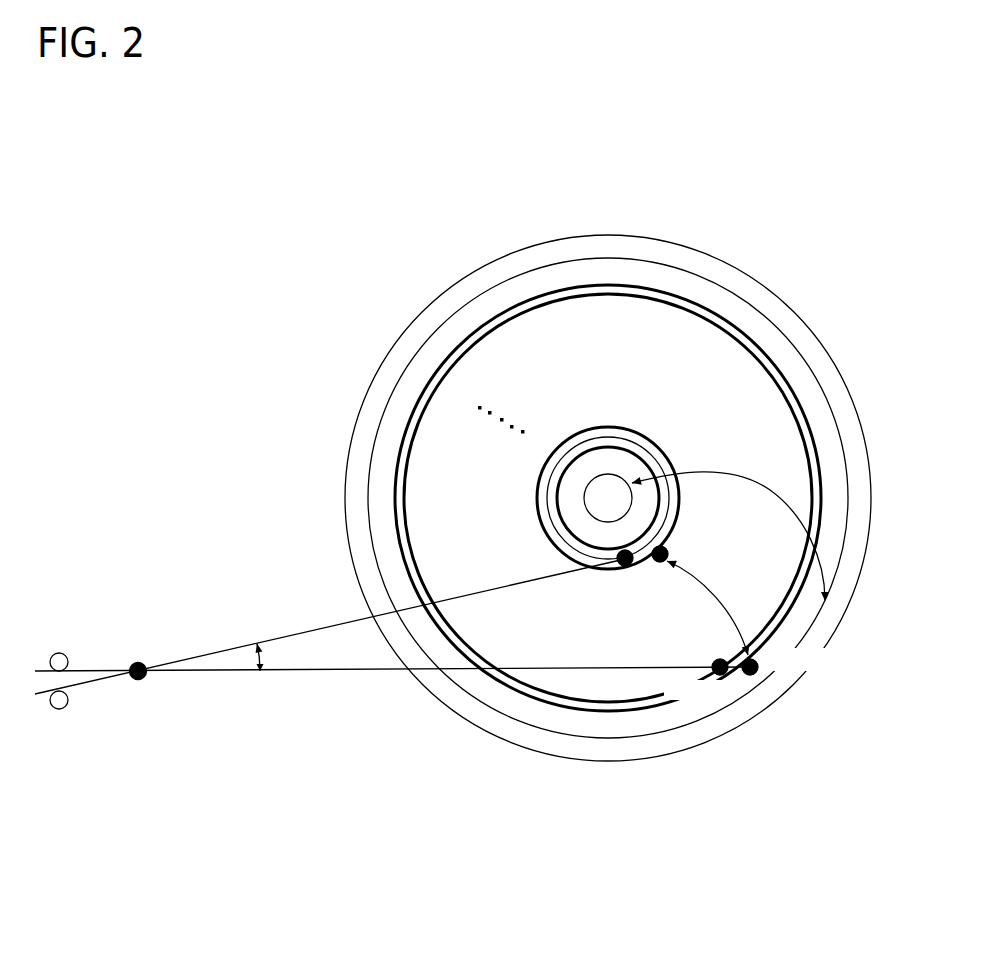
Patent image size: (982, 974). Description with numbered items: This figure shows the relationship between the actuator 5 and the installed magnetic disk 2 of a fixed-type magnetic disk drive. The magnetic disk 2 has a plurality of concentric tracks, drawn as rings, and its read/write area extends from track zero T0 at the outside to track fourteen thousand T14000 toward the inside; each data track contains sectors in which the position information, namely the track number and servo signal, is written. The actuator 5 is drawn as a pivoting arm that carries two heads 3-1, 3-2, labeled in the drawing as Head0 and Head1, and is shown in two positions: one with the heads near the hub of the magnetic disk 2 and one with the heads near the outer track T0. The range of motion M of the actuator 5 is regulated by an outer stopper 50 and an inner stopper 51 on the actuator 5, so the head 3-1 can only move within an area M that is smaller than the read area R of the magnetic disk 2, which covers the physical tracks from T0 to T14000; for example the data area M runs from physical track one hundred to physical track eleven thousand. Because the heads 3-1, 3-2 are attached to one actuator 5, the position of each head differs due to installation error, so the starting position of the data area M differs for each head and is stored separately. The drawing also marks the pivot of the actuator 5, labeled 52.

The magnetic disk 2 is at (440, 312).
The track 0 T0 is at (750, 302).
The track 14,000 T14000 is at (610, 285).
The actuator 5 is at (360, 677).
The head 3-1 is at (655, 515).
The head 3-2 is at (621, 562).
The outer stopper 50 is at (48, 657).
The inner stopper 51 is at (53, 709).
The pivot 52 is at (142, 665).
The read area R is at (730, 529).
The range of motion M is at (708, 608).
The head 0 label Head0 is at (757, 607).
The head 1 label Head1 is at (665, 640).